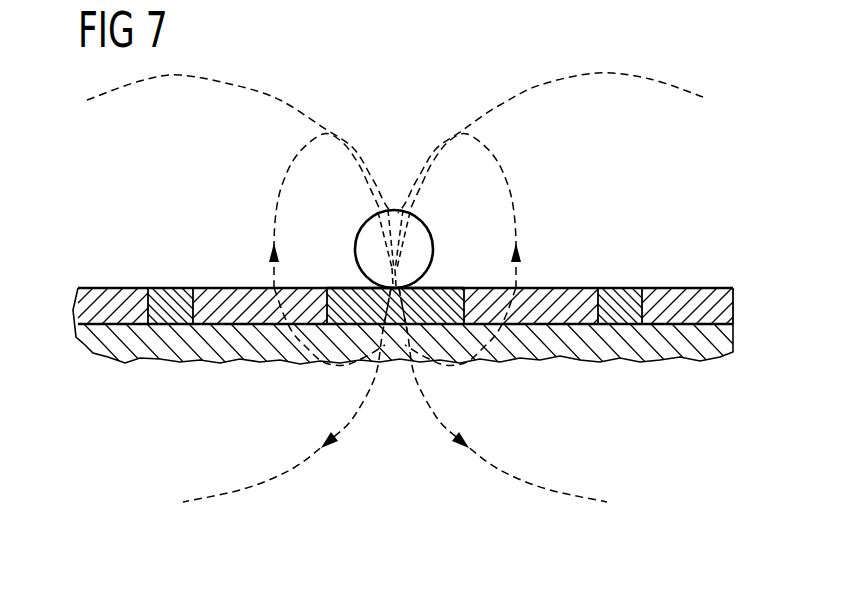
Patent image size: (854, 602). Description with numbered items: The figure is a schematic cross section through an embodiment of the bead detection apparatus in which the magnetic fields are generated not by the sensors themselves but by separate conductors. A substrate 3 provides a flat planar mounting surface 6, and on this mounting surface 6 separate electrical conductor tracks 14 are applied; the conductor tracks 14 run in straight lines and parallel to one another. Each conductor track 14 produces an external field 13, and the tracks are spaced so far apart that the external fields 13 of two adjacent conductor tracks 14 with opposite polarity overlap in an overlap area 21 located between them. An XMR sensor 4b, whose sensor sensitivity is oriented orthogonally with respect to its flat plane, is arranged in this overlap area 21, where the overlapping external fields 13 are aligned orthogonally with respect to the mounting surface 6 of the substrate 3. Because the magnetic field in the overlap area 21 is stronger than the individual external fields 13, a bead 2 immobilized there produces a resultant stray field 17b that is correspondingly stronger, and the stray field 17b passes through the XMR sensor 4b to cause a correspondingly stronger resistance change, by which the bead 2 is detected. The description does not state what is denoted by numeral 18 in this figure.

The bead 2 is at (415, 240).
The substrate 3 is at (685, 350).
The XMR sensor 4b is at (447, 285).
The mounting surface 6 is at (243, 323).
The external field 13 is at (228, 497).
The electrical conductor track 14 is at (165, 288).
The stray field 17b is at (272, 220).
The surface 18 is at (347, 285).
The overlap area 21 is at (392, 392).